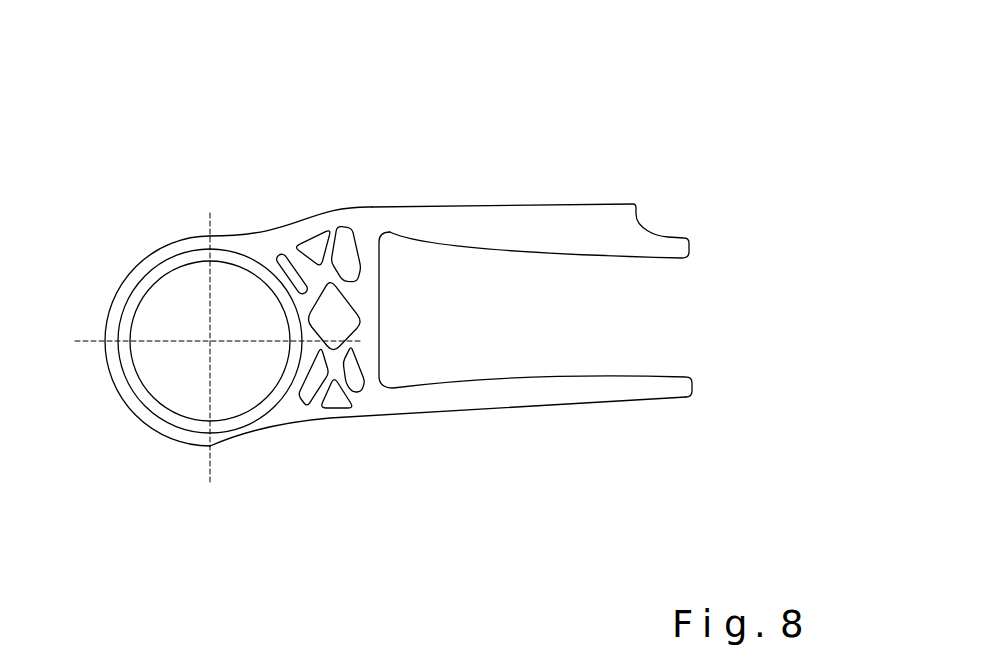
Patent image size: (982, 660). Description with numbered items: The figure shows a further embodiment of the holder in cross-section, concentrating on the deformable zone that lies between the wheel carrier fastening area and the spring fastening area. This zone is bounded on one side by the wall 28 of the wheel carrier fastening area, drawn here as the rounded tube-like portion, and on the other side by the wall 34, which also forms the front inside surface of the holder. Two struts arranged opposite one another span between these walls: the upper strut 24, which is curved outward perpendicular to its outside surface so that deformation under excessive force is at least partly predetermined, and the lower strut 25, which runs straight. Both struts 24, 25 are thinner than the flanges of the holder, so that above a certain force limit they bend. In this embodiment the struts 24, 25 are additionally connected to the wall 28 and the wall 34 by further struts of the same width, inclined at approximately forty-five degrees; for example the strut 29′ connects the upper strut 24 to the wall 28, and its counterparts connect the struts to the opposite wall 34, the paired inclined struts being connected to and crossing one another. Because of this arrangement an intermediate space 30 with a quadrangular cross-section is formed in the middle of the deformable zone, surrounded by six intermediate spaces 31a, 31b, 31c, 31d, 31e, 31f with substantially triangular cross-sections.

The upper strut 24 is at (304, 231).
The lower strut 25 is at (338, 416).
The wall 28 is at (300, 322).
The strut 29′ is at (342, 232).
The intermediate space 30 is at (346, 313).
The intermediate space 31a is at (281, 258).
The intermediate space 31b is at (320, 245).
The intermediate space 31c is at (350, 261).
The intermediate space 31d is at (305, 372).
The intermediate space 31e is at (339, 398).
The intermediate space 31f is at (360, 355).
The wall 34 is at (379, 352).